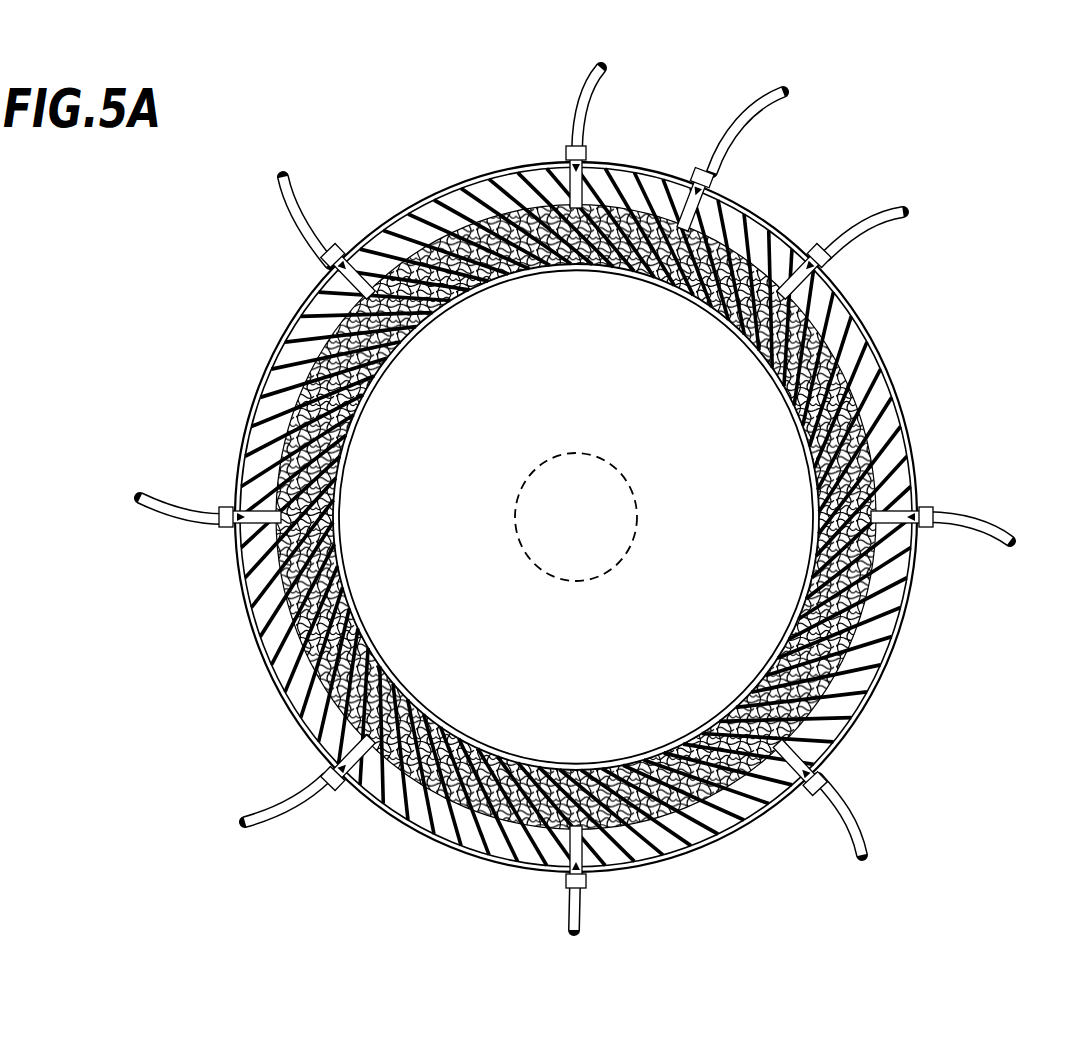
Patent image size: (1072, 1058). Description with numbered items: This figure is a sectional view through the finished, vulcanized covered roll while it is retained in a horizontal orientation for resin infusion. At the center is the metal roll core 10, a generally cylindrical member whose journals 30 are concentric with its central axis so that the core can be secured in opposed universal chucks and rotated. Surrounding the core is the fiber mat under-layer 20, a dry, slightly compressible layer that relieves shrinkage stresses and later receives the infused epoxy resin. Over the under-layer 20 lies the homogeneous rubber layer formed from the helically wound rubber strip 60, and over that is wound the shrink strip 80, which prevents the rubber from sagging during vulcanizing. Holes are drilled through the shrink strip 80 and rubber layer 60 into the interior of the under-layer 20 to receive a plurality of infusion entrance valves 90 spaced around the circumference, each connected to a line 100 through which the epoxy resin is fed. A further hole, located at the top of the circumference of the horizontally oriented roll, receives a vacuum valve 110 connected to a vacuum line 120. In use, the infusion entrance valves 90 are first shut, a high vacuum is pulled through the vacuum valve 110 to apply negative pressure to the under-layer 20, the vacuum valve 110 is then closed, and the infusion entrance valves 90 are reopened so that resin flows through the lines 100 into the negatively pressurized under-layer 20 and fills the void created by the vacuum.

The metal roll core 10 is at (628, 374).
The fiber mat under-layer 20 is at (863, 333).
The journals 30 is at (588, 508).
The rubber strip 60 is at (878, 415).
The shrink strip 80 is at (890, 368).
The infusion entrance valves 90 is at (588, 152).
The line 100 is at (603, 82).
The vacuum valve 110 is at (722, 183).
The vacuum line 120 is at (776, 101).